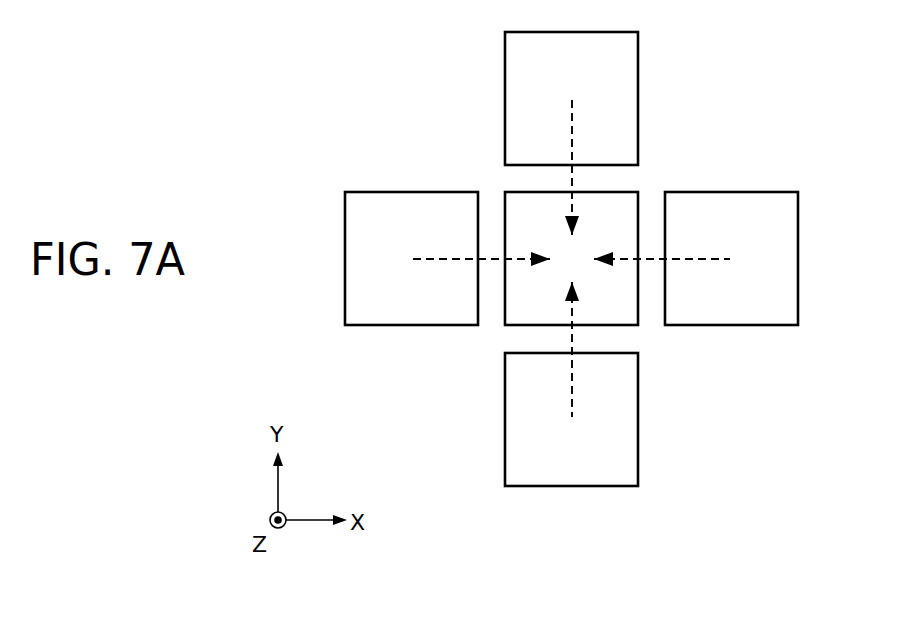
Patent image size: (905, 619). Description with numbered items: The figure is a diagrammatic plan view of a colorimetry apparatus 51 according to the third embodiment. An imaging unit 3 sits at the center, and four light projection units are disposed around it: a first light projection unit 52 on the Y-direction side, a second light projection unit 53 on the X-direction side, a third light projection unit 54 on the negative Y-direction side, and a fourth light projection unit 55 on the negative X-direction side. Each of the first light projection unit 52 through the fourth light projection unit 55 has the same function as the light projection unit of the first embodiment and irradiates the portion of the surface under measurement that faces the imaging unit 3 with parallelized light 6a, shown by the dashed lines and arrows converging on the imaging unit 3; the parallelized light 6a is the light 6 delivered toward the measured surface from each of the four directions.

The colorimetry apparatus 51 is at (752, 60).
The first light projection unit 52 is at (627, 88).
The second light projection unit 53 is at (743, 200).
The third light projection unit 54 is at (625, 425).
The fourth light projection unit 55 is at (373, 207).
The imaging unit 3 is at (642, 198).
The parallelized light 6a is at (572, 133).
The light 6 is at (572, 256).